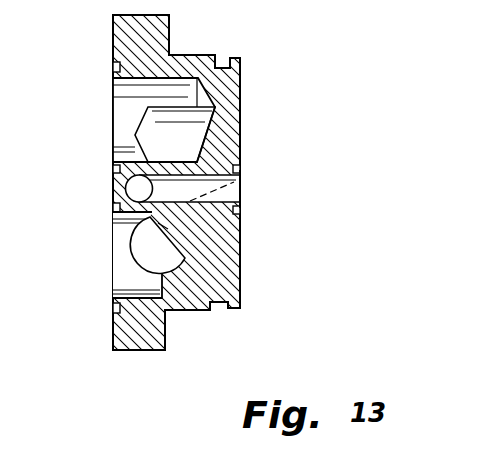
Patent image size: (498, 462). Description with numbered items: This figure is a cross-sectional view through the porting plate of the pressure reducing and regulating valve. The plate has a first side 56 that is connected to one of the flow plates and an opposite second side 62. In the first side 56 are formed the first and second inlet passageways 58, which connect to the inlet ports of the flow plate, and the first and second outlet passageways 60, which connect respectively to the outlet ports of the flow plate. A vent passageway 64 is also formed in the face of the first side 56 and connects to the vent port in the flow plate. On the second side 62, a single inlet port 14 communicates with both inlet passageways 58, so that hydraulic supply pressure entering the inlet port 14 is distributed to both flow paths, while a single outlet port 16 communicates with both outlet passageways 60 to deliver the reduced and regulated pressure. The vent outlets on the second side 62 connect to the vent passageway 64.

The second side 62 is at (113, 38).
The first side 56 is at (242, 92).
The inlet port 14 is at (118, 110).
The inlet passageways 58 is at (242, 136).
The vent passageway 64 is at (240, 189).
The outlet port 16 is at (117, 283).
The outlet passageways 60 is at (182, 263).